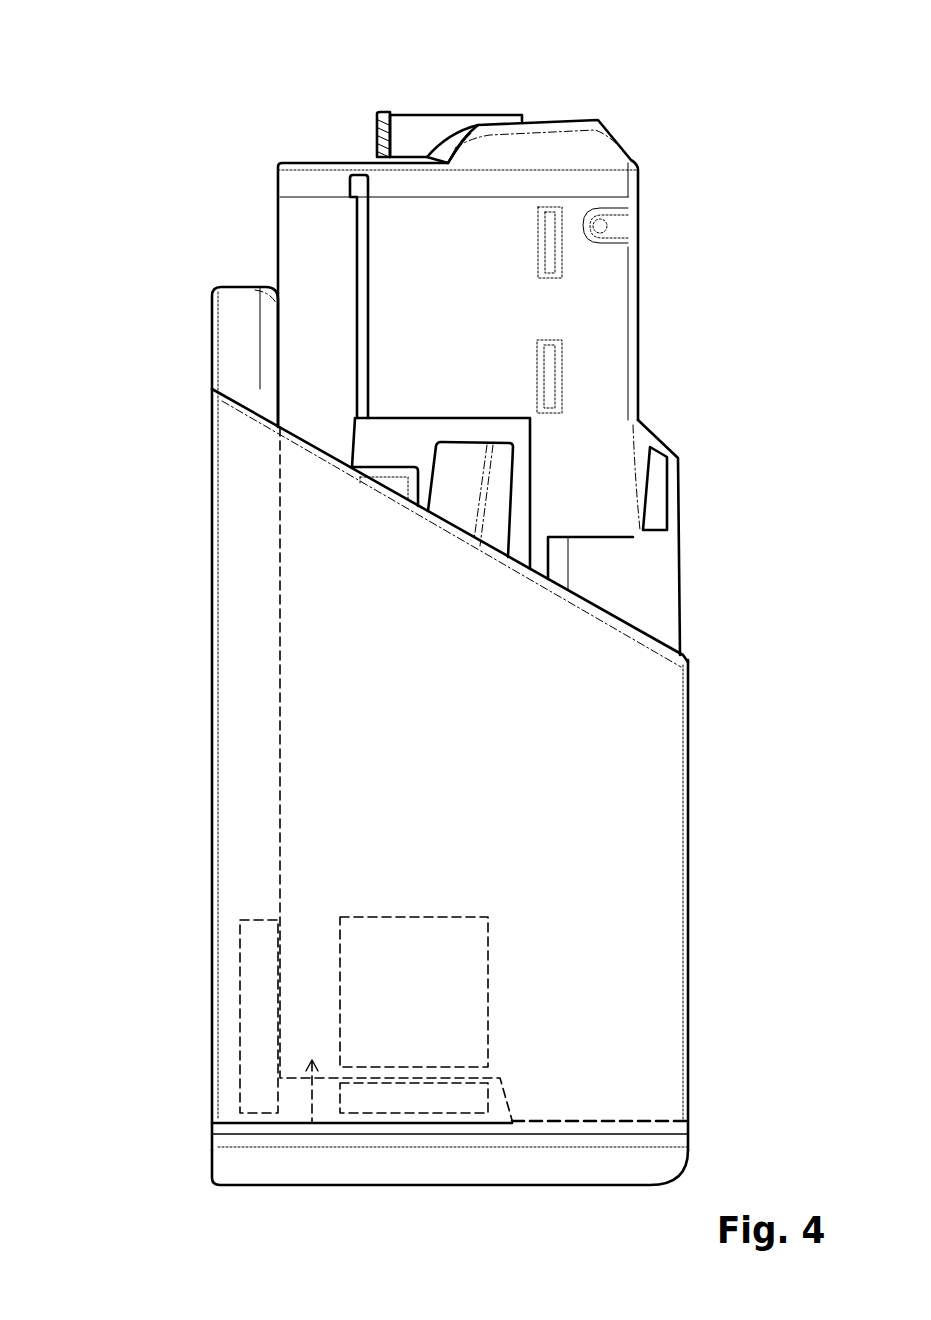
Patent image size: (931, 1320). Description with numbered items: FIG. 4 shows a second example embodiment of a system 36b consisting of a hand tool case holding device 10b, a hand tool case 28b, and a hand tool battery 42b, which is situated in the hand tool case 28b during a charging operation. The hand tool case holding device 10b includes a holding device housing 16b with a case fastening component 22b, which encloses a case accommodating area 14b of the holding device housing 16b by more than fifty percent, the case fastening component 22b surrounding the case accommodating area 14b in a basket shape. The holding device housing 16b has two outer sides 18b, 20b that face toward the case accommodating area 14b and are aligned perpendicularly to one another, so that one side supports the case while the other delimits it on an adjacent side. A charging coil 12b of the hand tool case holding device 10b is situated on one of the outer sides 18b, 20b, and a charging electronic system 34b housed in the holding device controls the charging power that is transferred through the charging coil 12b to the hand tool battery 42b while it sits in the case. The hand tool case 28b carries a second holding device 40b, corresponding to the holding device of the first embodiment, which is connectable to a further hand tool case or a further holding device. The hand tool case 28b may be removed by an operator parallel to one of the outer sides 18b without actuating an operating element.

The hand tool case holding device 10b is at (150, 200).
The charging coil 12b is at (367, 1100).
The case accommodating area 14b is at (439, 100).
The holding device housing 16b is at (226, 607).
The outer side 18b is at (296, 742).
The outer side 20b is at (312, 1123).
The case fastening component 22b is at (645, 705).
The hand tool case 28b is at (640, 322).
The charging electronic system 34b is at (246, 1020).
The system 36b is at (648, 104).
The second holding device 40b is at (702, 468).
The hand tool battery 42b is at (475, 1027).